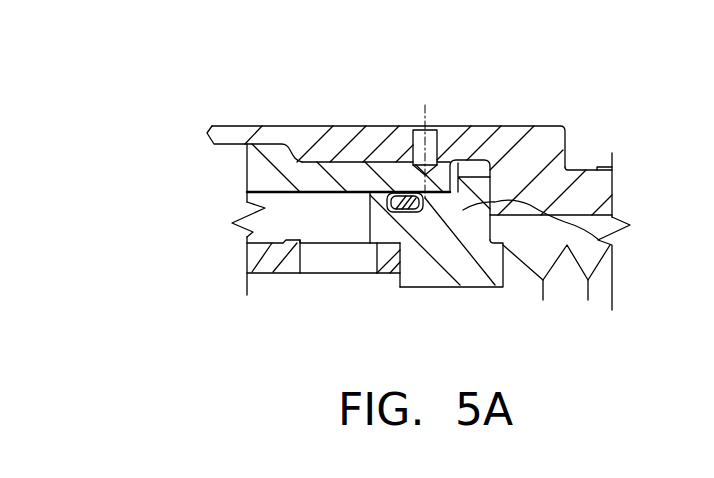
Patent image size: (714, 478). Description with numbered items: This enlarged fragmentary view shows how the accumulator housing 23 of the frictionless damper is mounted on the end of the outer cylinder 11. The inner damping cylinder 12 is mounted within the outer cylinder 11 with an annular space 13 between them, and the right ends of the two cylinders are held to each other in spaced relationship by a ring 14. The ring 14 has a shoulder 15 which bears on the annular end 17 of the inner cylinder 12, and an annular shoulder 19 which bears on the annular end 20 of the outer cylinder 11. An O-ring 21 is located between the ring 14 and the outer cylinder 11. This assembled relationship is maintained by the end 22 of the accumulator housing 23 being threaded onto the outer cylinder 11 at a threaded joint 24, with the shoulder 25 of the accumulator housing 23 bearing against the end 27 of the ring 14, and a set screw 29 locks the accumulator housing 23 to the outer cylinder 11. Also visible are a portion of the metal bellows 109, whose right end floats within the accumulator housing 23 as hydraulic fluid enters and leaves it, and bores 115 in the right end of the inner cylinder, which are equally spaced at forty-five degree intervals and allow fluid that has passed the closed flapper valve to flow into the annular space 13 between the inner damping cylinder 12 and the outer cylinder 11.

The outer cylinder 11 is at (247, 163).
The inner damping cylinder 12 is at (247, 257).
The annular space 13 is at (247, 233).
The ring 14 is at (468, 272).
The shoulder 15 is at (383, 272).
The annular end 17 is at (400, 258).
The annular shoulder 19 is at (450, 158).
The annular end 20 is at (488, 158).
The O-ring 21 is at (395, 192).
The end 22 is at (338, 126).
The accumulator housing 23 is at (582, 170).
The threaded joint 24 is at (315, 126).
The shoulder 25 is at (490, 275).
The end 27 is at (598, 240).
The set screw 29 is at (430, 126).
The metal bellows 109 is at (580, 263).
The bores 115 is at (317, 272).